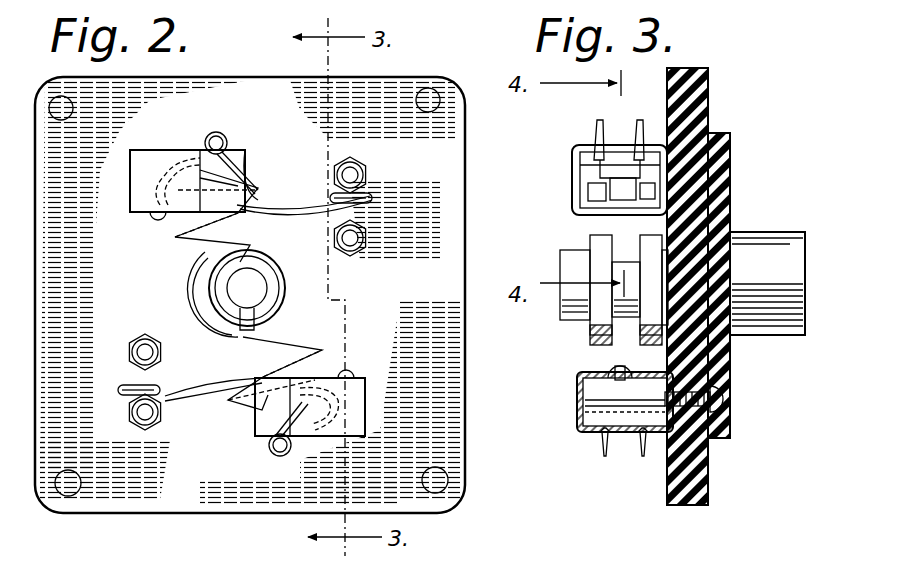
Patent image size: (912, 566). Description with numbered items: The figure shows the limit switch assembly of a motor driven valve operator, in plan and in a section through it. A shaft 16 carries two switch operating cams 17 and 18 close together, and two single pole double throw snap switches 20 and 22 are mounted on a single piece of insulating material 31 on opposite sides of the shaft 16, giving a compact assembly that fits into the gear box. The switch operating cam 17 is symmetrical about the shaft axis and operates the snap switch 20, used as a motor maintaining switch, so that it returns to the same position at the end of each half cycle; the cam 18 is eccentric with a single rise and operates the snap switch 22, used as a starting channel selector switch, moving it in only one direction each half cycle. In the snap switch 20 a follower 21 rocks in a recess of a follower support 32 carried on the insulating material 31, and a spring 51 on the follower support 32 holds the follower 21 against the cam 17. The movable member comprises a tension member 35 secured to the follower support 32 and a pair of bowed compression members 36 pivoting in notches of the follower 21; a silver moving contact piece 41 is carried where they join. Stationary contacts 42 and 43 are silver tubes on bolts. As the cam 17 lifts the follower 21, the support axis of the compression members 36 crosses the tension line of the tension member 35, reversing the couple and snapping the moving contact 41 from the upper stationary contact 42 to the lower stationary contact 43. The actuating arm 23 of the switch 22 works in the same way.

In FIG. 2, the shaft 16 is at (252, 292).
In FIG. 3, the shaft 16 is at (763, 255).
In FIG. 2, the switch operating cam 17 is at (215, 318).
In FIG. 3, the switch operating cam 17 is at (606, 318).
In FIG. 2, the switch operating cam 18 is at (292, 296).
In FIG. 3, the switch operating cam 18 is at (598, 258).
In FIG. 2, the single pole double throw snap switch 20 is at (336, 146).
In FIG. 2, the follower 21 is at (180, 222).
In FIG. 2, the single pole double throw snap switch 22 is at (212, 402).
In FIG. 2, the lower switch actuating arm 23 is at (285, 350).
In FIG. 3, the insulating material 31 is at (713, 81).
In FIG. 2, the follower support 32 is at (130, 183).
In FIG. 2, the tension member 35 is at (262, 205).
In FIG. 2, the compression members 36 is at (282, 212).
In FIG. 2, the moving contact piece 41 is at (372, 198).
In FIG. 2, the stationary contact 42 is at (366, 180).
In FIG. 2, the stationary contact 43 is at (366, 240).
In FIG. 2, the spring 51 is at (219, 132).